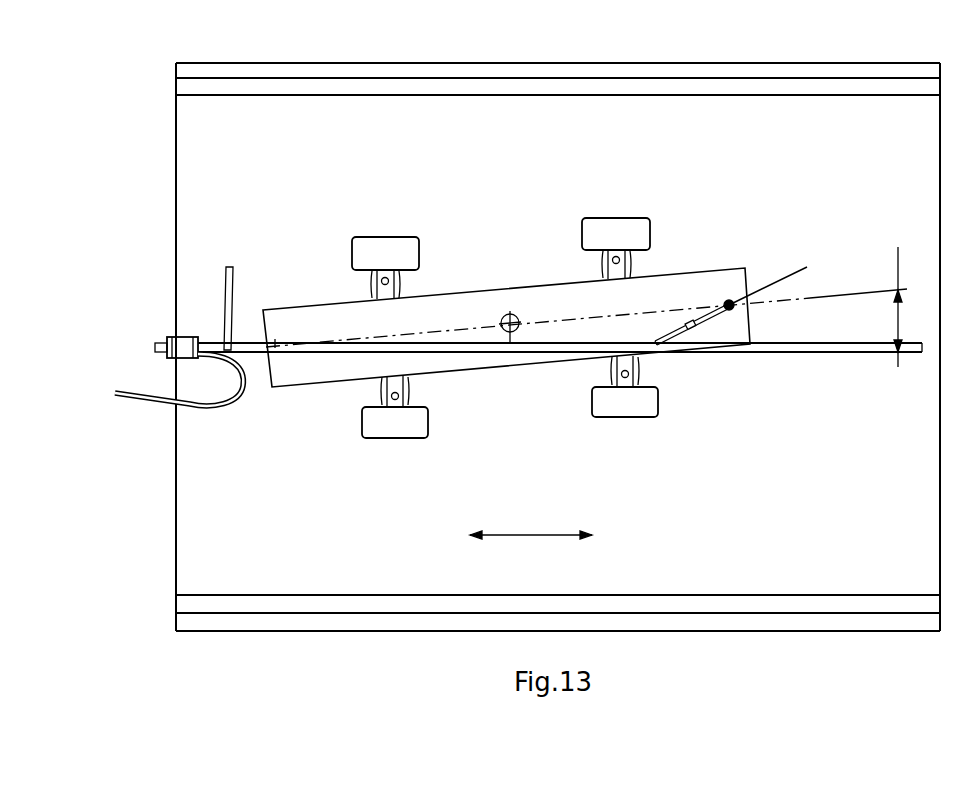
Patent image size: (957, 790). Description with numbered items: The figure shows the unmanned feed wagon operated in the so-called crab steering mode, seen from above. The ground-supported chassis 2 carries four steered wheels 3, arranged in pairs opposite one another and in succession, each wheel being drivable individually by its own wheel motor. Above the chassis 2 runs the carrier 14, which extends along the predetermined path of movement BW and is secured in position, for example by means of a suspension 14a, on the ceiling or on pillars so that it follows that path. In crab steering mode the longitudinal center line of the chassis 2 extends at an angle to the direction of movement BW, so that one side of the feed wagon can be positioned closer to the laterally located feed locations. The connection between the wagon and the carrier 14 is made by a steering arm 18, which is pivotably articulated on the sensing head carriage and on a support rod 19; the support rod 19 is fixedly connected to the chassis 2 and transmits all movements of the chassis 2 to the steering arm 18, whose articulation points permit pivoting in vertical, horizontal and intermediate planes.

The chassis 2 is at (485, 212).
The steered wheels 3 is at (383, 250).
The carrier 14 is at (795, 352).
The suspension 14a is at (226, 268).
The steering arm 18 is at (703, 320).
The support rod 19 is at (731, 310).
The predetermined path of movement BW is at (531, 521).